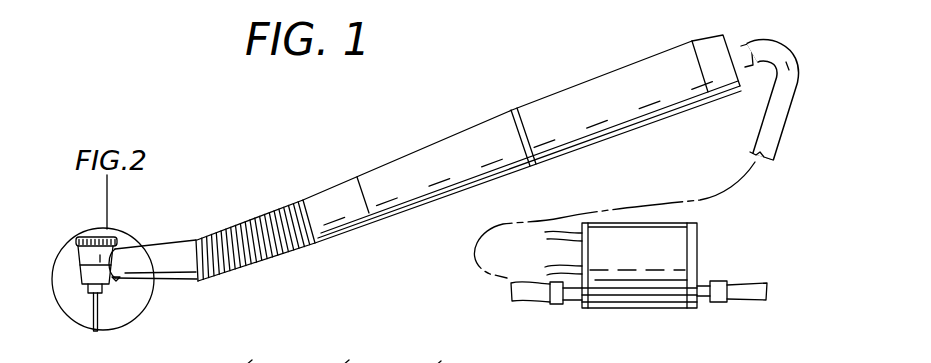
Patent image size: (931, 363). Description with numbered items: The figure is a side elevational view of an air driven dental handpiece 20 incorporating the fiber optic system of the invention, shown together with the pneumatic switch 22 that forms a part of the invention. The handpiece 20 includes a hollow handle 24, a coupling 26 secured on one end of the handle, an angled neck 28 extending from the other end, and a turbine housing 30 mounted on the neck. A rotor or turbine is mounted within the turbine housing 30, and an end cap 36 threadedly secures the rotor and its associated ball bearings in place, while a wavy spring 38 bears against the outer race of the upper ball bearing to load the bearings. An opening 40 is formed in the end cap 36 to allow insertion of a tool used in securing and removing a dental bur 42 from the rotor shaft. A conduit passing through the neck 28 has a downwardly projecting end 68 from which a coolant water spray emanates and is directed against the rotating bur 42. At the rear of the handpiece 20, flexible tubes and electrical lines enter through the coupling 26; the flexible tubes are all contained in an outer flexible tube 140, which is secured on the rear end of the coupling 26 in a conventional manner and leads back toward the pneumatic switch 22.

The air driven dental handpiece 20 is at (450, 114).
The pneumatic switch 22 is at (665, 312).
The hollow handle 24 is at (410, 155).
The coupling 26 is at (648, 58).
The angled neck 28 is at (171, 242).
The turbine housing 30 is at (76, 292).
The end cap 36 is at (447, 357).
The wavy spring 38 is at (250, 362).
The opening 40 is at (347, 362).
The dental bur 42 is at (103, 310).
The downwardly projecting end 68 is at (118, 280).
The outer flexible tube 140 is at (792, 21).